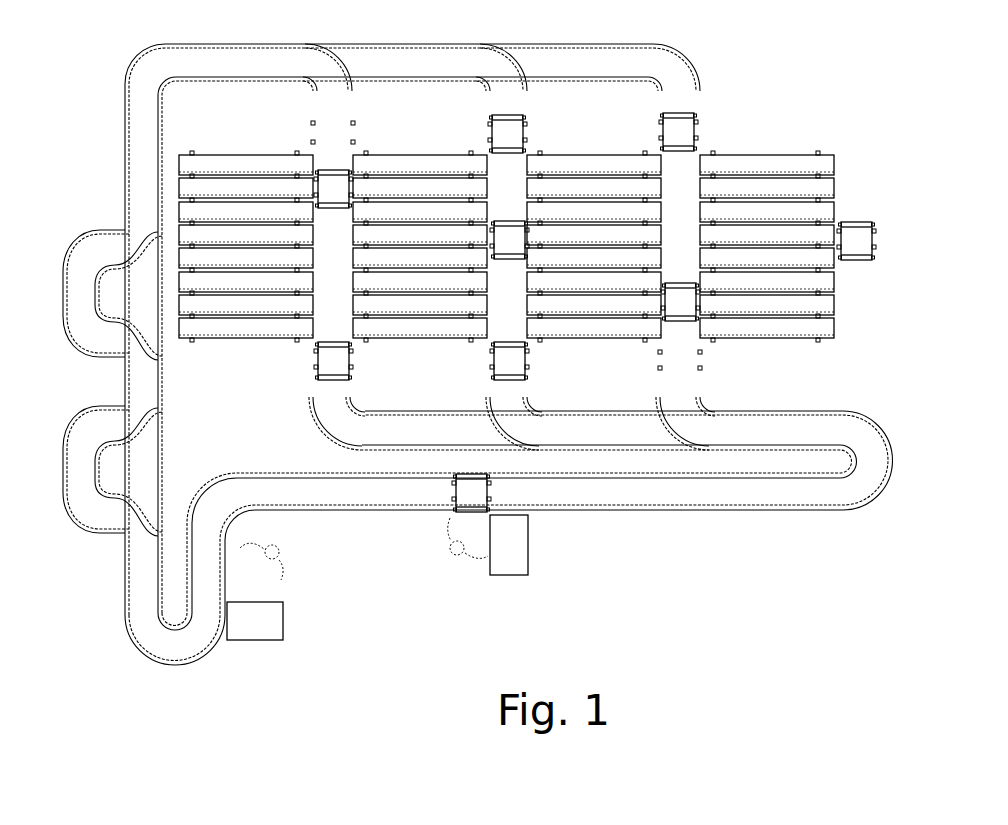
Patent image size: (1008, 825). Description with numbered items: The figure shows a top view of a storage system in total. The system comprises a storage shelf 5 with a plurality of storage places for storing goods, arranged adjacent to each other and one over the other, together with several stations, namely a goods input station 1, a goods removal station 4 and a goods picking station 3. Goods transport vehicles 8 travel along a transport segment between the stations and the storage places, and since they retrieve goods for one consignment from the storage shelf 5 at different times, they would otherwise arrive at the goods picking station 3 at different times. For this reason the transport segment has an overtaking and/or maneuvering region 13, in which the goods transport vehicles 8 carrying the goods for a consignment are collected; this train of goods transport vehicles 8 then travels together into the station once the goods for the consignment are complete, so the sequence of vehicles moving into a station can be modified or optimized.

The goods input station 1 is at (240, 631).
The goods picking station 3 is at (676, 328).
The goods removal station 4 is at (517, 548).
The storage shelf 5 is at (772, 140).
The goods transport vehicle 8 is at (678, 127).
The overtaking and/or maneuvering region 13 is at (87, 270).